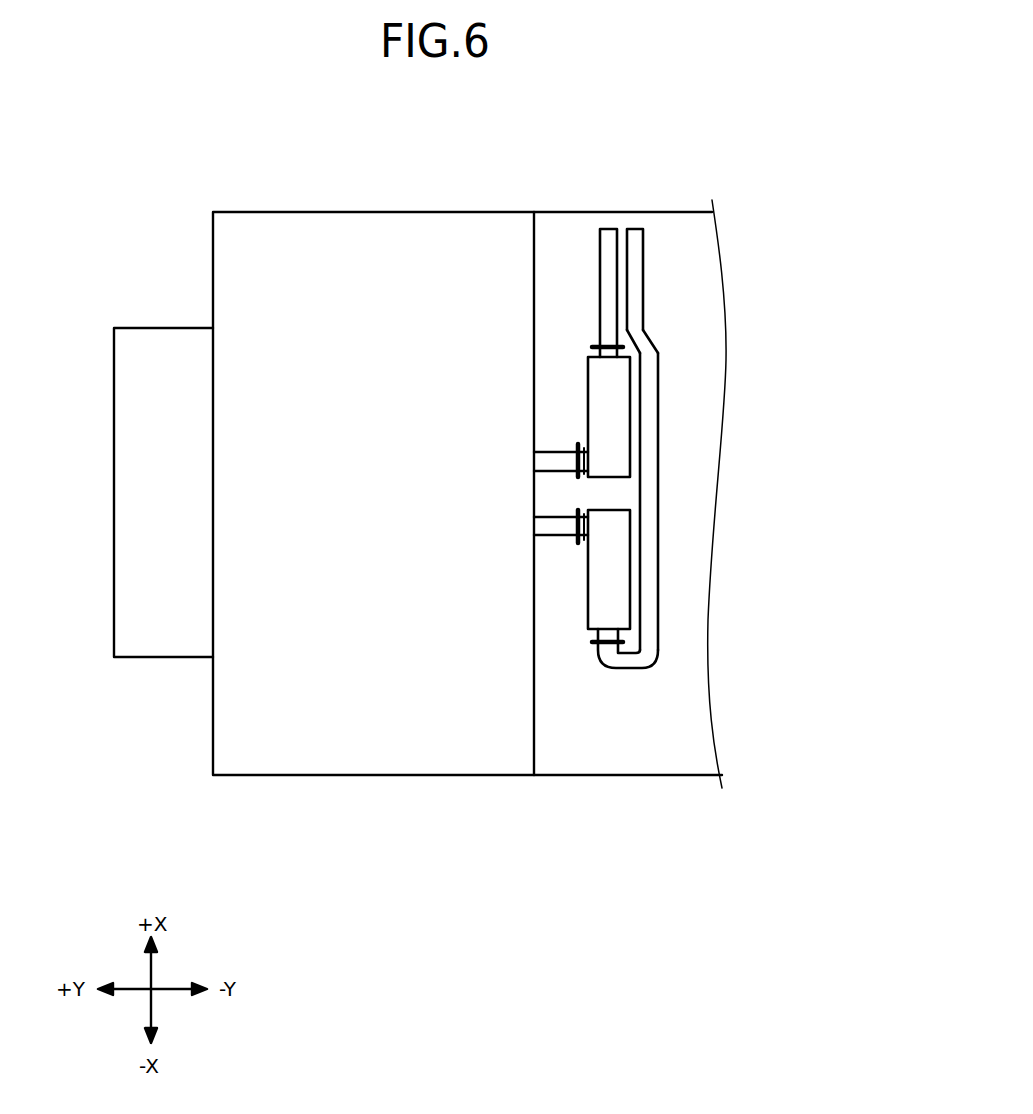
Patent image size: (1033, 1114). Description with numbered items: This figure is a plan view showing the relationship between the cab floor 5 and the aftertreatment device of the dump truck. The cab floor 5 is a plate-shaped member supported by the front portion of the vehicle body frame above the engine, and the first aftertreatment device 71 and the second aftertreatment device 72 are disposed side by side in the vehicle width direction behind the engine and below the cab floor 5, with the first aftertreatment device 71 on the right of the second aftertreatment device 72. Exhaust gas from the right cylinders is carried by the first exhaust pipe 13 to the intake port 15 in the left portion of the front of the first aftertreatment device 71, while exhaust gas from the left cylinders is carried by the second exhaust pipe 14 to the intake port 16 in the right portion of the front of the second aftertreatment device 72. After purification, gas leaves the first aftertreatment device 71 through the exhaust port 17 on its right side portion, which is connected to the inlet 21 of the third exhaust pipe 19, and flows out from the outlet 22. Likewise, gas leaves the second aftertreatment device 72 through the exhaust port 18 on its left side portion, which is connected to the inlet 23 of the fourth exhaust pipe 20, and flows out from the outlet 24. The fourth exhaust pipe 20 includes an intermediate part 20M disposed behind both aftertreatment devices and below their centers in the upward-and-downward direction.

The cab floor 5 is at (344, 737).
The first exhaust pipe 13 is at (540, 458).
The second exhaust pipe 14 is at (540, 535).
The intake port 15 is at (575, 456).
The intake port 16 is at (575, 535).
The exhaust port 17 is at (618, 352).
The exhaust port 18 is at (607, 668).
The third exhaust pipe 19 is at (623, 229).
The fourth exhaust pipe 20 is at (628, 668).
The intermediate part 20M is at (652, 533).
The inlet 21 is at (643, 332).
The outlet 22 is at (615, 250).
The inlet 23 is at (610, 648).
The outlet 24 is at (635, 229).
The first aftertreatment device 71 is at (622, 418).
The second aftertreatment device 72 is at (623, 568).